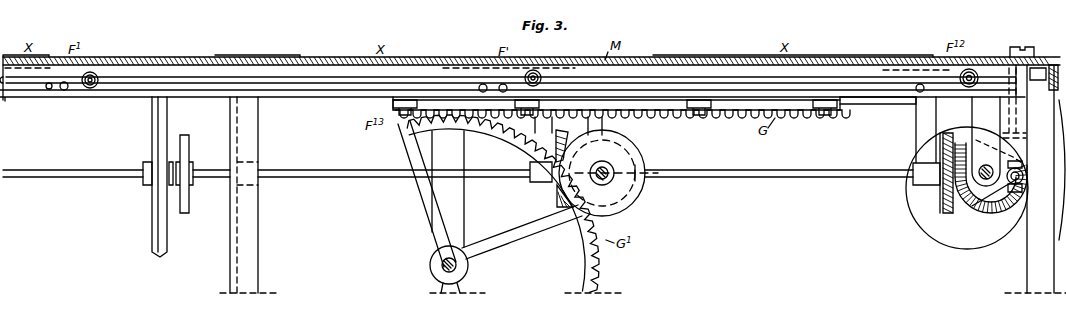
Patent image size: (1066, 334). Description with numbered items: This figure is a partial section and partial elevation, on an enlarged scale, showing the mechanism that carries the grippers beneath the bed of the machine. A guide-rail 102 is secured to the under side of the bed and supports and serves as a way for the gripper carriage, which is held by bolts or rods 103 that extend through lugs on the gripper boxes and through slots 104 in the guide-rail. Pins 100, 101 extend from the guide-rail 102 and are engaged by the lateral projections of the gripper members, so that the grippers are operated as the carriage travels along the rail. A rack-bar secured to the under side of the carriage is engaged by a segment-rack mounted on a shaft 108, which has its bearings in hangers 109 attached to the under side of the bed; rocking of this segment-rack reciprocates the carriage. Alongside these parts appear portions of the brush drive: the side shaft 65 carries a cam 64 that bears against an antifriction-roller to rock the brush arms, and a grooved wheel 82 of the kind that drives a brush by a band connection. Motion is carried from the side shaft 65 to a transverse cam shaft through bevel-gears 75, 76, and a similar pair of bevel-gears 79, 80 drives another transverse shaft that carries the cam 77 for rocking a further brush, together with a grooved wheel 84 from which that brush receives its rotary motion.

The bolts or rods 103 is at (97, 73).
The pin 100 is at (49, 90).
The pin 101 is at (67, 90).
The cam 64 is at (190, 200).
The grooved wheel 82 is at (150, 233).
The shaft 108 is at (441, 265).
The hangers 109 is at (466, 215).
The bevel-gear 76 is at (566, 138).
The bevel-gear 75 is at (635, 198).
The side shaft 65 is at (735, 172).
The guide-rail 102 is at (845, 104).
The slots 104 is at (872, 78).
The grooved wheel 84 is at (984, 255).
The bevel-gear 80 is at (940, 208).
The cam 77 is at (968, 212).
The bevel-gear 79 is at (988, 216).